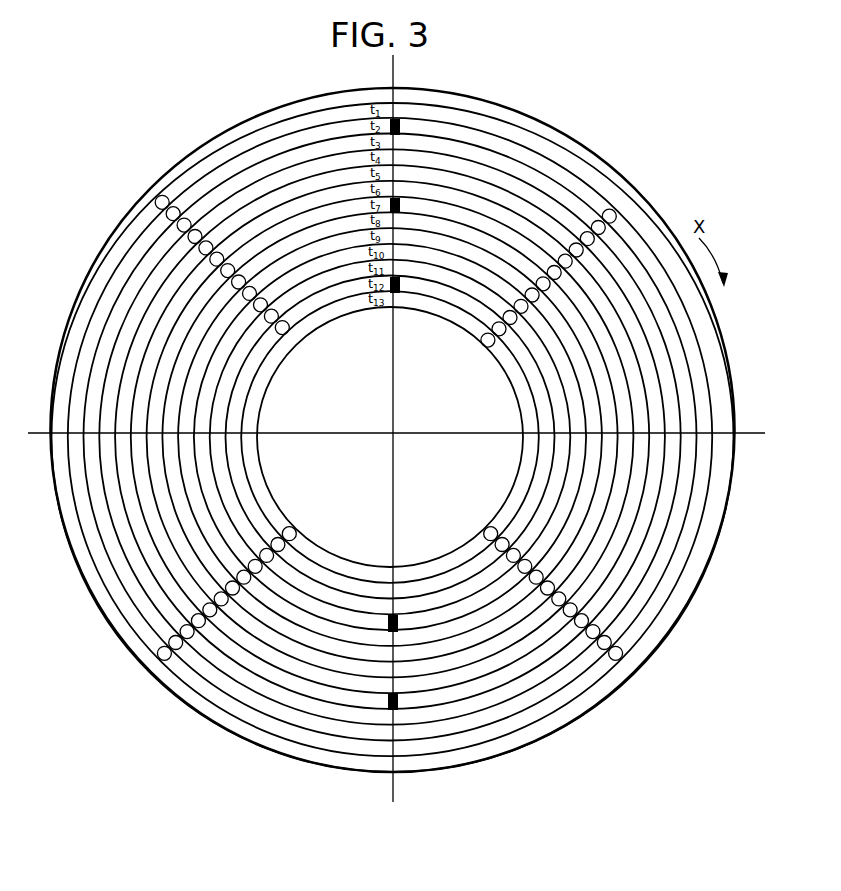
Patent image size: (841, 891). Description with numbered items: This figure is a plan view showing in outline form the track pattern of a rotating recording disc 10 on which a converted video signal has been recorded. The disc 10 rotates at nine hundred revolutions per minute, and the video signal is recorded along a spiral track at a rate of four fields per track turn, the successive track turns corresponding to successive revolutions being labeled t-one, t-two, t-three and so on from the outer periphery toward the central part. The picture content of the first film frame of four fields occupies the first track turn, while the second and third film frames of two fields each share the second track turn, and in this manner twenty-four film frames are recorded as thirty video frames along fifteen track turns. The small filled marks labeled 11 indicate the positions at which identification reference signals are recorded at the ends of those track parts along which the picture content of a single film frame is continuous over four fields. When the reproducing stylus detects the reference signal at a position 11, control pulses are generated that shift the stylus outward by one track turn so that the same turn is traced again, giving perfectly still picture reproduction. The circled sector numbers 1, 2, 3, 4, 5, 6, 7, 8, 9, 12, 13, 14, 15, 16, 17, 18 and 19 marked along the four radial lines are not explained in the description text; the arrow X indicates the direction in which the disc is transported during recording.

The rotating recording disc 10 is at (566, 137).
The reference signal position 11 is at (400, 205).
The sector 1 is at (388, 427).
The sector 2 is at (174, 428).
The sector 3 is at (601, 435).
The sector 4 is at (185, 428).
The sector 5 is at (394, 434).
The sector 6 is at (578, 435).
The sector 7 is at (208, 429).
The sector 8 is at (567, 435).
The sector 9 is at (388, 429).
The sector 12 is at (241, 429).
The sector 13 is at (393, 435).
The sector 14 is at (523, 436).
The sector 15 is at (264, 430).
The sector 16 is at (511, 437).
The sector 17 is at (386, 430).
The sector 18 is at (285, 431).
The sector 19 is at (489, 437).